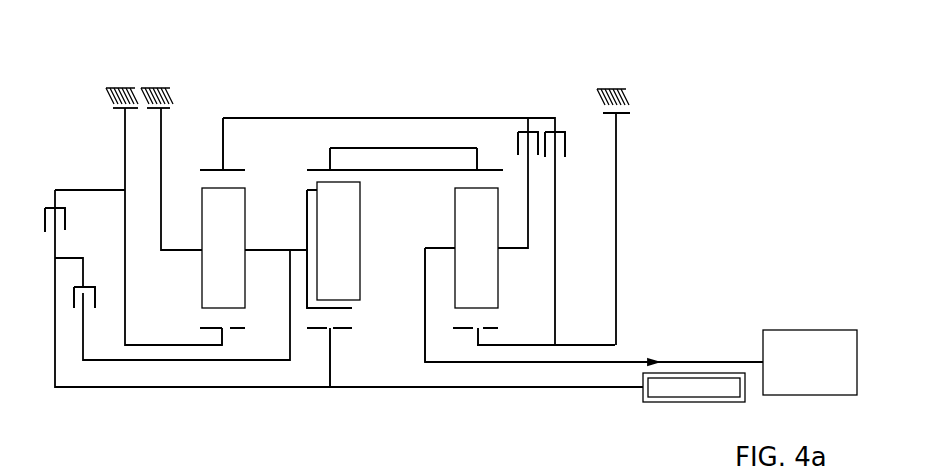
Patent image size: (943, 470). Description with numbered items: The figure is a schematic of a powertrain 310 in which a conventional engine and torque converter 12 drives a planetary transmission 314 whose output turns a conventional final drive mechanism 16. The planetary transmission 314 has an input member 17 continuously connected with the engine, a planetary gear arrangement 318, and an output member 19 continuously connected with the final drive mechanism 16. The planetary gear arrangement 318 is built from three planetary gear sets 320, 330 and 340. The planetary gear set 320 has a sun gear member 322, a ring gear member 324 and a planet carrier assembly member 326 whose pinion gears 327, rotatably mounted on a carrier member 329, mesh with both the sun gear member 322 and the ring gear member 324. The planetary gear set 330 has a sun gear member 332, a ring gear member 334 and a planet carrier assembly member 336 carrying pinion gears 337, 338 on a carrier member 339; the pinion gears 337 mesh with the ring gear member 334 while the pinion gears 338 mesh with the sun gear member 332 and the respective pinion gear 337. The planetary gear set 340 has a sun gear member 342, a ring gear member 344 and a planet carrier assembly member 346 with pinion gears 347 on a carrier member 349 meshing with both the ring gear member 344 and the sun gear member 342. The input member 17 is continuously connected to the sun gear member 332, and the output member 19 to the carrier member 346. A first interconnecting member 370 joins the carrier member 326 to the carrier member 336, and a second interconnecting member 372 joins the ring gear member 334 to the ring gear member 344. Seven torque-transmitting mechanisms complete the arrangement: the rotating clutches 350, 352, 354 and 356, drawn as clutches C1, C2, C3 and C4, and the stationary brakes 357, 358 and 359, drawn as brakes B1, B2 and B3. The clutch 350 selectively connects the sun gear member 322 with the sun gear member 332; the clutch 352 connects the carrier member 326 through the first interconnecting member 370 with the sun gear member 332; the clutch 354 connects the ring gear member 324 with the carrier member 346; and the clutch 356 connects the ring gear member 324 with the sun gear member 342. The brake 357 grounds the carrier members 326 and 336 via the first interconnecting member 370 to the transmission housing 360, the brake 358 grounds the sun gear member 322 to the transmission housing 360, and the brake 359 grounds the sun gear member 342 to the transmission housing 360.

The engine and torque converter 12 is at (707, 402).
The final drive mechanism 16 is at (818, 330).
The input member 17 is at (557, 387).
The output member 19 is at (628, 362).
The powertrain 310 is at (477, 53).
The planetary transmission 314 is at (528, 60).
The planetary gear arrangement 318 is at (238, 62).
The planetary gear set 320 is at (213, 334).
The sun gear member 322 is at (230, 329).
The ring gear member 324 is at (222, 168).
The planet carrier assembly member 326 is at (193, 245).
The pinion gears 327 is at (226, 248).
The first carrier member 329 is at (172, 255).
The planetary gear set 330 is at (325, 332).
The sun gear member 332 is at (340, 330).
The ring gear member 334 is at (338, 172).
The planet carrier assembly member 336 is at (301, 238).
The pinion gears 337 is at (341, 241).
The pinion gears 338 is at (352, 308).
The carrier member 339 is at (297, 240).
The planetary gear set 340 is at (475, 332).
The sun gear member 342 is at (487, 329).
The ring gear member 344 is at (470, 170).
The planet carrier assembly member 346 is at (447, 237).
The pinion gears 347 is at (478, 248).
The carrier member 349 is at (437, 247).
The clutch 350 is at (61, 234).
The clutch 352 is at (80, 314).
The clutch 354 is at (522, 162).
The clutch 356 is at (563, 160).
The brake 357 is at (179, 110).
The brake 358 is at (109, 110).
The brake 359 is at (633, 116).
The transmission housing 360 is at (171, 88).
The first interconnecting member 370 is at (265, 252).
The second interconnecting member 372 is at (425, 147).
The first brake B1 is at (175, 98).
The second brake B2 is at (108, 98).
The third brake B3 is at (630, 103).
The first clutch C1 is at (43, 235).
The second clutch C2 is at (96, 317).
The third clutch C3 is at (525, 123).
The fourth clutch C4 is at (572, 141).